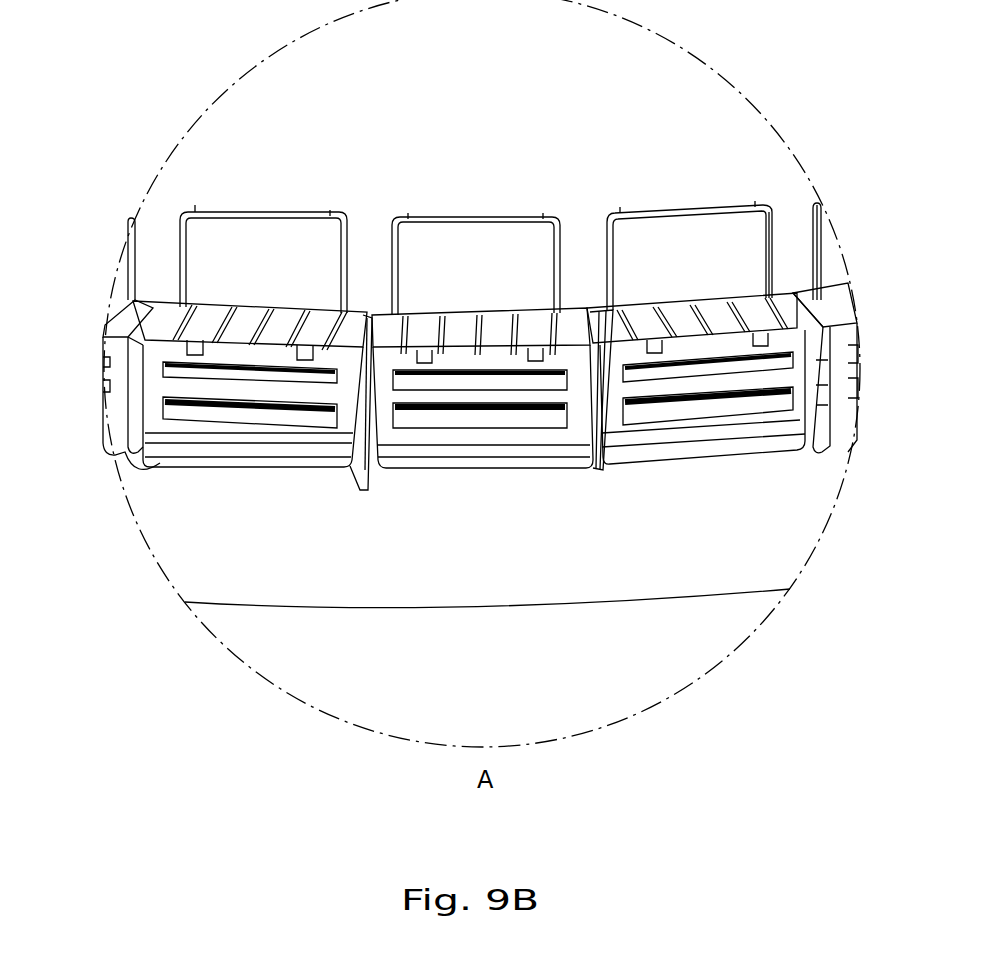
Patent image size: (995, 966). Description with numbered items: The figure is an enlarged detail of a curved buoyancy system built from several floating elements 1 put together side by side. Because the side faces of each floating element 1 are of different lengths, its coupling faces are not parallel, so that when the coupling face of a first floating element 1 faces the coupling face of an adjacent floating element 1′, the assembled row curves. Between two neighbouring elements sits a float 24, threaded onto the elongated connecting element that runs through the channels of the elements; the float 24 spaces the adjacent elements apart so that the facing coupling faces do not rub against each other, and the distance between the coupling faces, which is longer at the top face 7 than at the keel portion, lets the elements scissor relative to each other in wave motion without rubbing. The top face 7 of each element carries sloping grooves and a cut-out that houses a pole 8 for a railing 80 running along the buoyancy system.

The floating element 1 is at (381, 493).
The adjacent floating element 1′ is at (171, 259).
The railing 80 is at (752, 203).
The pole 8 is at (772, 232).
The top face 7 is at (827, 293).
The float 24 is at (152, 300).